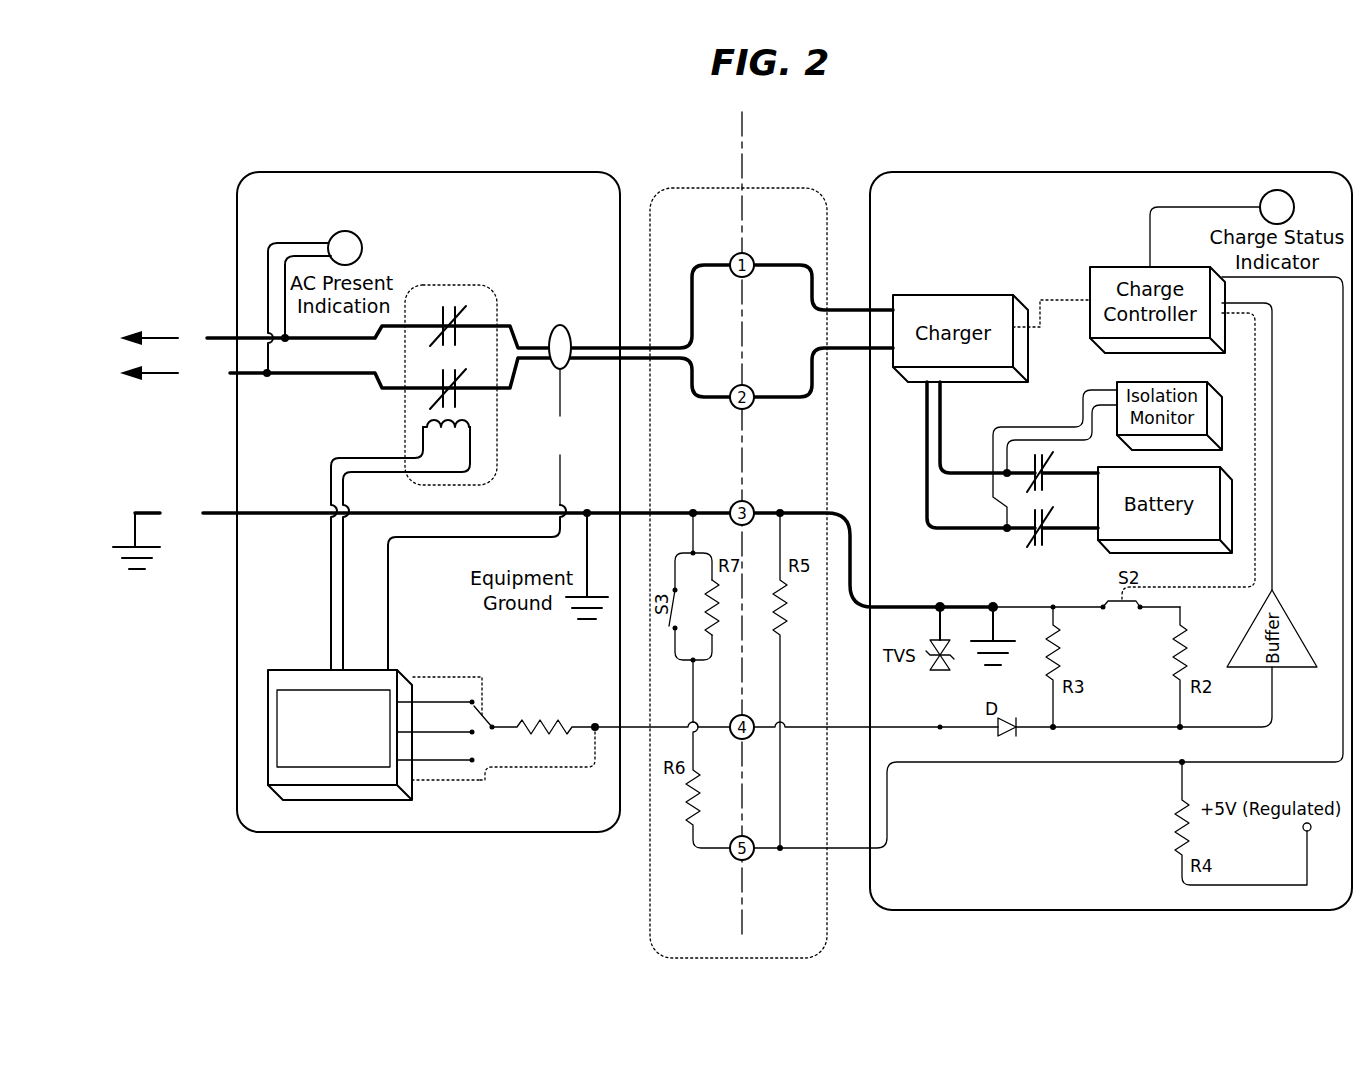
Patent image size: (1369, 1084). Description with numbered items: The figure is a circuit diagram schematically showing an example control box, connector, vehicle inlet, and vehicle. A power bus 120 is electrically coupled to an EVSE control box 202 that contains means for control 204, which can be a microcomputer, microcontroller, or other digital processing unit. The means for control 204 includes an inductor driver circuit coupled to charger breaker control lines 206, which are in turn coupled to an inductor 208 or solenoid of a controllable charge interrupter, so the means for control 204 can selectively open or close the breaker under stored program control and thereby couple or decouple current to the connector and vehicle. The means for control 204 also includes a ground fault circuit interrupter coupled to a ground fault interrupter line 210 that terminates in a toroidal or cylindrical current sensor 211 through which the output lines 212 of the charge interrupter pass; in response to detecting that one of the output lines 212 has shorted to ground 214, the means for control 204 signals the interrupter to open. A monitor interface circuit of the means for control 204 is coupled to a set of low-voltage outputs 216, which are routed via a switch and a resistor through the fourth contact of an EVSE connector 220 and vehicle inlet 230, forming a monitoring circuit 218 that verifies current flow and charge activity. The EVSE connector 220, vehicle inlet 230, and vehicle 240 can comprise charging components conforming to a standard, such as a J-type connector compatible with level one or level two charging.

The power bus 120 is at (163, 394).
The EVSE control box 202 is at (428, 502).
The means for control 204 is at (340, 735).
The charger breaker control lines 206 is at (330, 612).
The inductor 208 is at (425, 436).
The ground fault interrupter line 210 is at (390, 611).
The current sensor 211 is at (569, 326).
The output lines 212 is at (584, 364).
The ground 214 is at (135, 513).
The low-voltage outputs 216 is at (437, 777).
The monitoring circuit 218 is at (565, 777).
The EVSE connector 220 is at (695, 205).
The vehicle inlet 230 is at (797, 205).
The vehicle 240 is at (1111, 541).